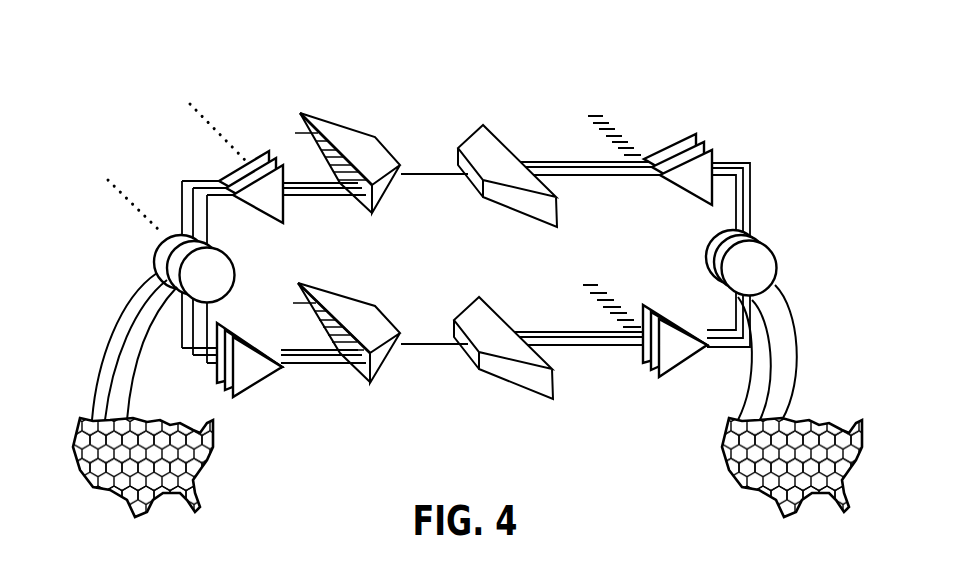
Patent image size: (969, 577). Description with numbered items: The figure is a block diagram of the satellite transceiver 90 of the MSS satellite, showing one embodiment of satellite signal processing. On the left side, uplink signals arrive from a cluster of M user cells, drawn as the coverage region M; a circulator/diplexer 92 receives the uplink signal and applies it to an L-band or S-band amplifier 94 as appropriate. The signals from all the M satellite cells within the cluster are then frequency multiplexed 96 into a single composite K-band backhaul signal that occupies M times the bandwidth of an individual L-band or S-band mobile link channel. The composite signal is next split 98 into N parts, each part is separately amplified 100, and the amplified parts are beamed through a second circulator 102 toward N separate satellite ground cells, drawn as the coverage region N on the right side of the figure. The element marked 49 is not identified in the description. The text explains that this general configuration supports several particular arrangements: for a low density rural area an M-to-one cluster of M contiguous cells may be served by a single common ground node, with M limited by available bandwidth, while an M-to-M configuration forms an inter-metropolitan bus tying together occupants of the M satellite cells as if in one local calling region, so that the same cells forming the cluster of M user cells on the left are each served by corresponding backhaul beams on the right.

The optical amplifier 49 is at (269, 143).
The satellite transceiver 90 is at (759, 157).
The circulator/diplexer 92 is at (235, 271).
The L-band or S-band amplifier 94 is at (247, 386).
The frequency multiplexer 96 is at (381, 378).
The splitter 98 is at (490, 304).
The amplifier 100 is at (688, 370).
The second circulator 102 is at (717, 269).
The number of satellite cells in a cluster M is at (94, 327).
The number of satellite ground cells N is at (814, 347).